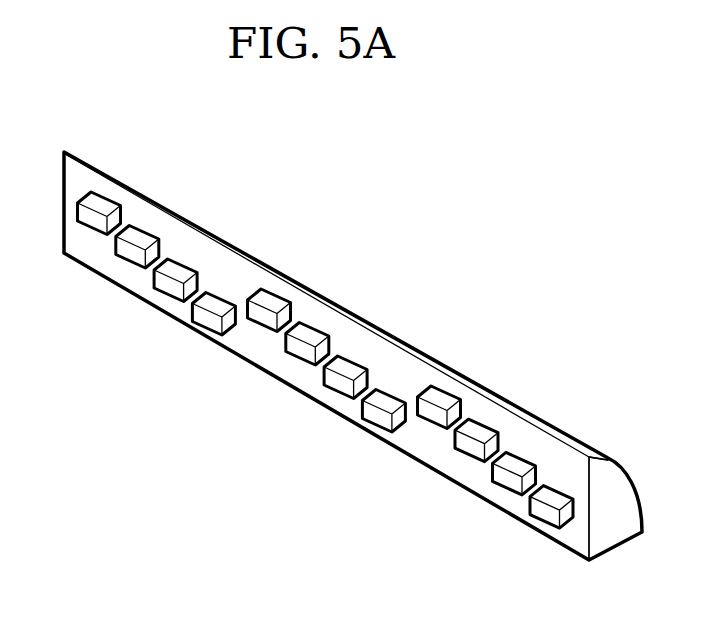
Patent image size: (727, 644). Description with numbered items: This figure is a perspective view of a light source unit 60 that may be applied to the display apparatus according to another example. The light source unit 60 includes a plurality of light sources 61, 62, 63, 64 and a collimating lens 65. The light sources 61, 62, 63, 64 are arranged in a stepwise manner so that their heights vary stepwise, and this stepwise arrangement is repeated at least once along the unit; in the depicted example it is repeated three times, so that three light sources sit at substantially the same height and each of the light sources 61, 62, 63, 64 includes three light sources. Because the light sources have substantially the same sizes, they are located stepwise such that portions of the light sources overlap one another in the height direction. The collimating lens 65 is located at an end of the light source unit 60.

The light source unit 60 is at (335, 380).
The light source 61 is at (90, 221).
The light source 62 is at (130, 252).
The light source 63 is at (170, 287).
The light source 64 is at (206, 320).
The collimating lens 65 is at (613, 535).